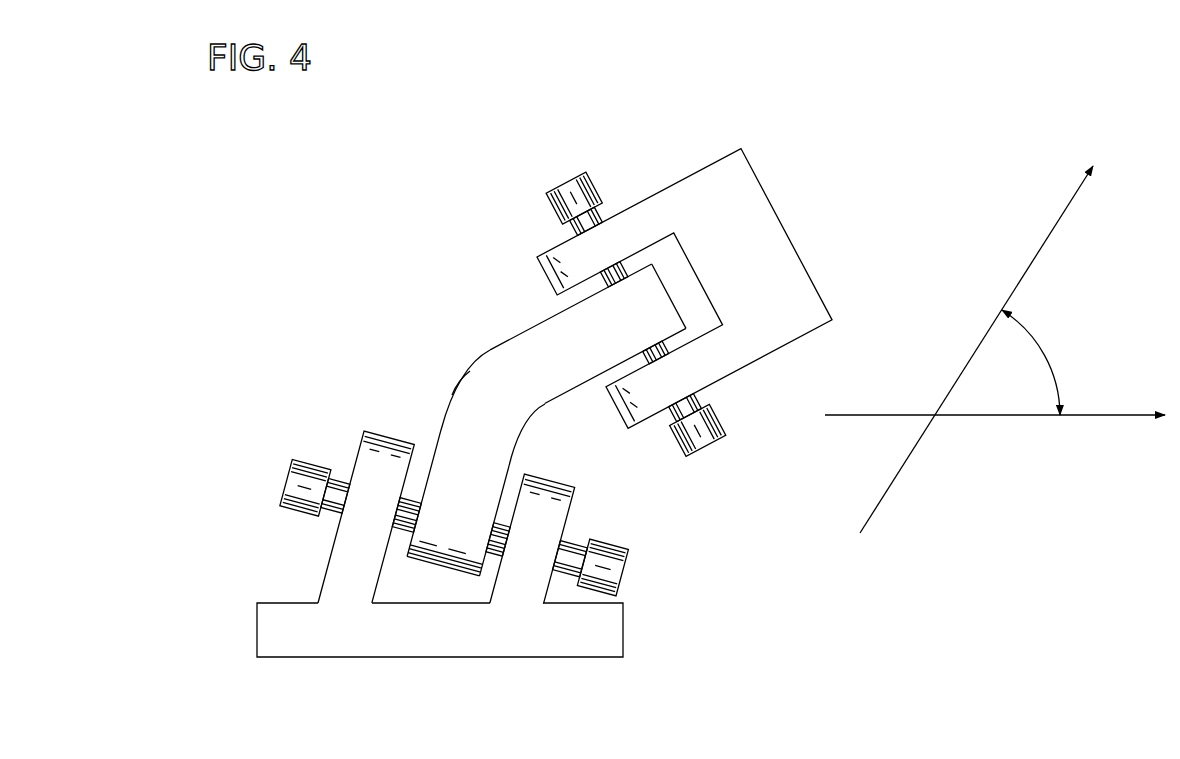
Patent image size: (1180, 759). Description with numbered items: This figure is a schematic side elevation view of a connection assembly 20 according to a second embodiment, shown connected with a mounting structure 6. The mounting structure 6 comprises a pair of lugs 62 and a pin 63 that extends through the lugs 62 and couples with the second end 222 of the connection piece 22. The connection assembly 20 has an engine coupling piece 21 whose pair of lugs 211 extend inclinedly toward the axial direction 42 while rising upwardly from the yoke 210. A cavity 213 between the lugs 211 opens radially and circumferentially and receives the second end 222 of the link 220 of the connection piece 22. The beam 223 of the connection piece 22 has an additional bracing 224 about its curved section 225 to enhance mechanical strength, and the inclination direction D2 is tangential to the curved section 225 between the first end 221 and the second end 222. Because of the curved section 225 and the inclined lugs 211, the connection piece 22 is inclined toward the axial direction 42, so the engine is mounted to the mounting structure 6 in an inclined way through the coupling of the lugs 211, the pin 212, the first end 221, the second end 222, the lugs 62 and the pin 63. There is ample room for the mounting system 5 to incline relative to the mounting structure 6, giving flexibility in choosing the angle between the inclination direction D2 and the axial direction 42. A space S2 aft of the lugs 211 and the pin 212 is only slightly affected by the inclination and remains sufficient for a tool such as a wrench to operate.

The mounting system 5 is at (463, 133).
The mounting structure 6 is at (662, 167).
The lugs 62 is at (708, 368).
The pin 63 is at (578, 212).
The connection assembly 20 is at (396, 212).
The engine coupling piece 21 is at (497, 671).
The yoke 210 is at (291, 657).
The lugs 211 is at (345, 578).
The pin 212 is at (290, 487).
The cavity 213 is at (428, 590).
The connection piece 22 is at (432, 306).
The link 220 is at (555, 337).
The first end 221 is at (448, 517).
The second end 222 is at (657, 297).
The beam 223 is at (472, 363).
The bracing 224 is at (530, 420).
The curved section 225 is at (498, 372).
The space S2 is at (664, 523).
The inclination direction D2 is at (1047, 240).
The axial direction 42 is at (1003, 417).